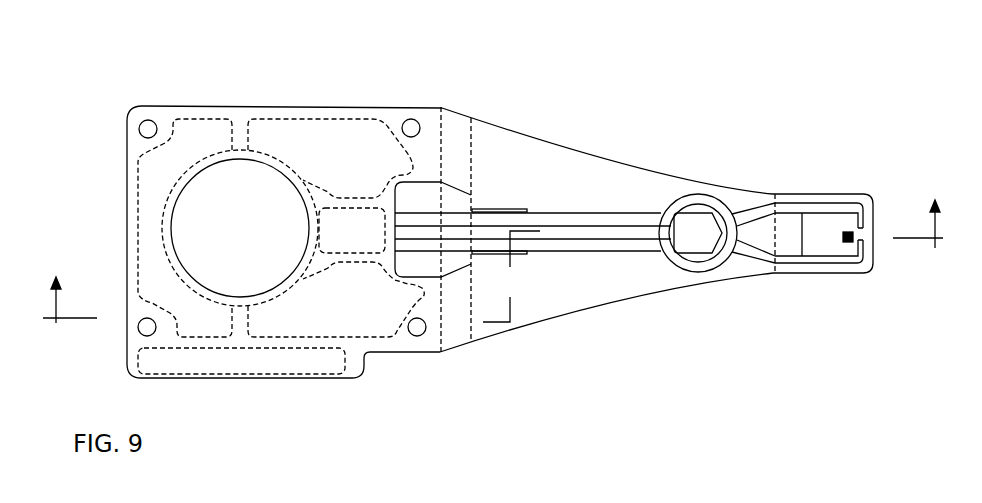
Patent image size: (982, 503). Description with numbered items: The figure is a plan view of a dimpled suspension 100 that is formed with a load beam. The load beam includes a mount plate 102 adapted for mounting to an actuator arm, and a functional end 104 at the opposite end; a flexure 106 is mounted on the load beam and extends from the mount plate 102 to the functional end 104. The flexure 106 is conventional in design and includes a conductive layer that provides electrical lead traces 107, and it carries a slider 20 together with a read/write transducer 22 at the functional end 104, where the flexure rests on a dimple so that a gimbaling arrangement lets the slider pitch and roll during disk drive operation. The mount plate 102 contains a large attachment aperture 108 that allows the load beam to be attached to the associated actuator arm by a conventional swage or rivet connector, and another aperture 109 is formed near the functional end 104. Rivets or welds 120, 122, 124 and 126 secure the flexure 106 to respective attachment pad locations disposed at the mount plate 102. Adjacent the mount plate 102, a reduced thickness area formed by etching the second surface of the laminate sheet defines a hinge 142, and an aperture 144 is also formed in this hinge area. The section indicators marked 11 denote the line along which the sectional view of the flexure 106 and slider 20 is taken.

The suspension 100 is at (107, 97).
The mount plate 102 is at (280, 88).
The functional end 104 is at (773, 165).
The flexure 106 is at (558, 165).
The electrical lead traces 107 is at (578, 223).
The attachment aperture 108 is at (185, 187).
The aperture 109 is at (695, 242).
The rivet or weld 120 is at (152, 123).
The rivet or weld 122 is at (410, 118).
The rivet or weld 124 is at (417, 332).
The rivet or weld 126 is at (145, 330).
The hinge 142 is at (457, 140).
The aperture 144 is at (444, 208).
The slider 20 is at (835, 228).
The read/write transducer 22 is at (852, 247).
The section line 11- 11 is at (497, 274).